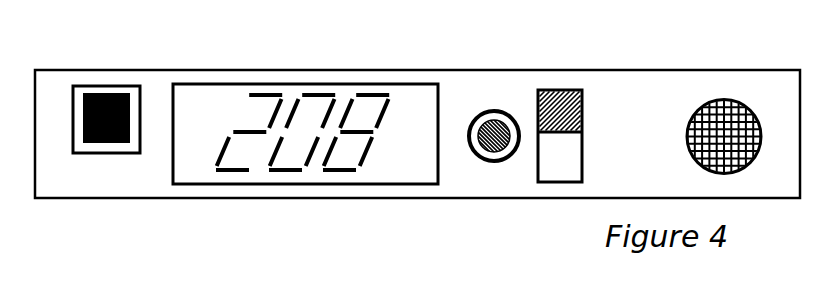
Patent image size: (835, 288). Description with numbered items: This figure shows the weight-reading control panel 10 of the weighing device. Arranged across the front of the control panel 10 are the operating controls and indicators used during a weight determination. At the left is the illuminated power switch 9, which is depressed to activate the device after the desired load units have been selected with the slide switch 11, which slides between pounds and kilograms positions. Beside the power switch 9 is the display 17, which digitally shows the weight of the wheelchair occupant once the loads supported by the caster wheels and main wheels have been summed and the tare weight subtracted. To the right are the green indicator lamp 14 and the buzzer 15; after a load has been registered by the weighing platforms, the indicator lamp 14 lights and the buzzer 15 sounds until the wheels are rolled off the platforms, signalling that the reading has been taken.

The illuminated power switch 9 is at (105, 93).
The control panel 10 is at (670, 97).
The slide switch 11 is at (557, 92).
The indicator lamp 14 is at (494, 122).
The buzzer 15 is at (723, 100).
The display 17 is at (196, 95).